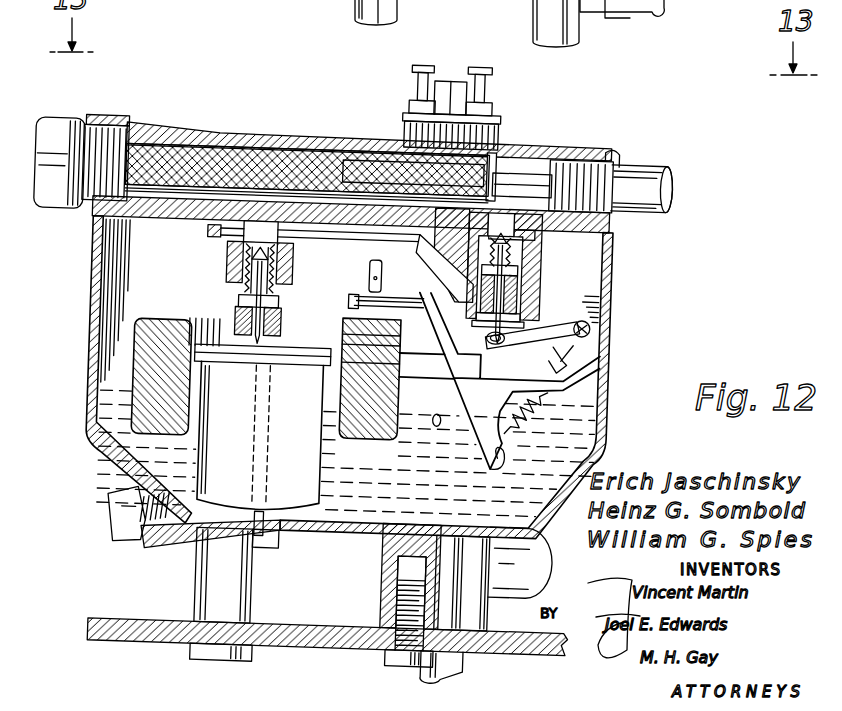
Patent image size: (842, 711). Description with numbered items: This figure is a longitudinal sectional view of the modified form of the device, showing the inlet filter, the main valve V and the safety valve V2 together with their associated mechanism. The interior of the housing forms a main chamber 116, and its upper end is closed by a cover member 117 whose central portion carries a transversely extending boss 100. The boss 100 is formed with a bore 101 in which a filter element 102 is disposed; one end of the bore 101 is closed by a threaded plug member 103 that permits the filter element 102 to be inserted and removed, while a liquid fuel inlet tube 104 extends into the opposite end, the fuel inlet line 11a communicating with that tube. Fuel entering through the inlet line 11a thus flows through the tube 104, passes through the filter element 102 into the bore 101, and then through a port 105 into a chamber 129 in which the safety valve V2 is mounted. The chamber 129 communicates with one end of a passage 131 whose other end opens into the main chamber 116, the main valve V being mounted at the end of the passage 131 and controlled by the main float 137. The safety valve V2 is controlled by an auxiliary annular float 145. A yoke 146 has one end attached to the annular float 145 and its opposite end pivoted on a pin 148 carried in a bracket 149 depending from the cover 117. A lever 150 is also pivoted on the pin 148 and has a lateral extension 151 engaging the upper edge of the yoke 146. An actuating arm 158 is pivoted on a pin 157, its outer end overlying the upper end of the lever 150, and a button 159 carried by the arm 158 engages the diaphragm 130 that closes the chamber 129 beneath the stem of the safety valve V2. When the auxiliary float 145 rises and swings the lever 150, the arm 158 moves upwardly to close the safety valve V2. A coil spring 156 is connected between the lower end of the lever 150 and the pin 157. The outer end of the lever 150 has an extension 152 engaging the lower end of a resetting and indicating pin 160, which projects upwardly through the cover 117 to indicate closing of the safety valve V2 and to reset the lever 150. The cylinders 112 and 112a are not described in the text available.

The fuel inlet line 11a is at (643, 160).
The boss 100 is at (247, 147).
The bore 101 is at (207, 156).
The filter element 102 is at (280, 159).
The threaded plug member 103 is at (94, 133).
The liquid fuel inlet tube 104 is at (503, 159).
The port 105 is at (507, 188).
The cylinder 112 is at (531, 12).
The boss 112a is at (579, 14).
The main chamber 116 is at (182, 303).
The cover member 117 is at (154, 205).
The chamber 129 is at (528, 221).
The diaphragm 130 is at (461, 313).
The passage 131 is at (309, 242).
The main float 137 is at (292, 524).
The auxiliary annular float 145 is at (158, 338).
The yoke 146 is at (413, 367).
The pin 148 is at (599, 355).
The bracket 149 is at (582, 277).
The lever 150 is at (350, 305).
The lateral extension 151 is at (485, 336).
The extension 152 is at (353, 294).
The coil spring 156 is at (593, 389).
The pin 157 is at (596, 325).
The actuating arm 158 is at (538, 325).
The button 159 is at (482, 425).
The resetting and indicating pin 160 is at (380, 273).
The main valve V is at (236, 277).
The safety valve V2 is at (527, 283).